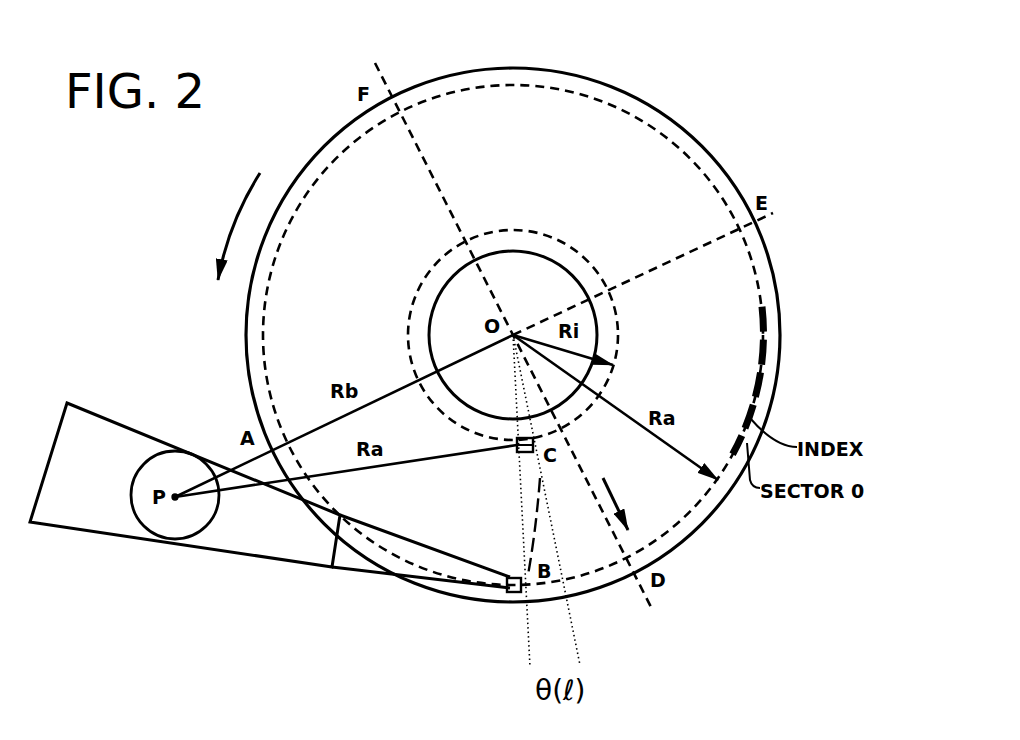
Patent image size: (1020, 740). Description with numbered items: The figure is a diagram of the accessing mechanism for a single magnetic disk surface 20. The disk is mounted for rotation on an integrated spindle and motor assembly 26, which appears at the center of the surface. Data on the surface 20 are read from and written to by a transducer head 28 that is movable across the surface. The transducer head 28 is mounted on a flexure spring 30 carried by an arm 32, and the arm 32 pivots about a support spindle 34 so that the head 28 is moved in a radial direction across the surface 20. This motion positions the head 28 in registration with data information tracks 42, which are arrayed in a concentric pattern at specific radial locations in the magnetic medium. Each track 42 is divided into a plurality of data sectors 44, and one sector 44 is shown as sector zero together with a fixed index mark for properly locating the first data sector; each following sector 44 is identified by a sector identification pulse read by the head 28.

The magnetic surface 20 is at (543, 107).
The integrated spindle and motor assembly 26 is at (525, 305).
The transducer head 28 is at (515, 592).
The flexure spring 30 is at (435, 563).
The arm 32 is at (277, 528).
The support spindle 34 is at (177, 498).
The data information track 42 is at (757, 272).
The data sector 44 is at (758, 398).